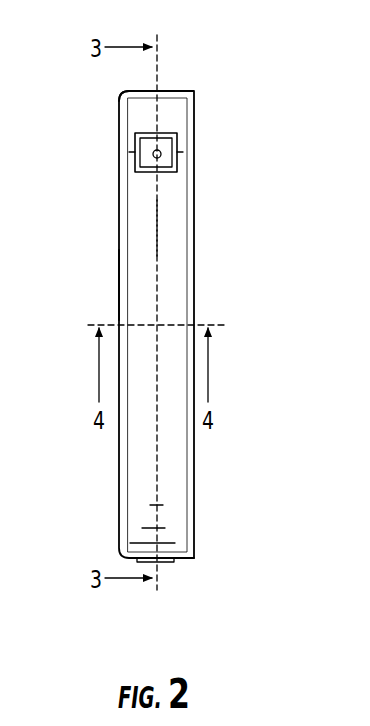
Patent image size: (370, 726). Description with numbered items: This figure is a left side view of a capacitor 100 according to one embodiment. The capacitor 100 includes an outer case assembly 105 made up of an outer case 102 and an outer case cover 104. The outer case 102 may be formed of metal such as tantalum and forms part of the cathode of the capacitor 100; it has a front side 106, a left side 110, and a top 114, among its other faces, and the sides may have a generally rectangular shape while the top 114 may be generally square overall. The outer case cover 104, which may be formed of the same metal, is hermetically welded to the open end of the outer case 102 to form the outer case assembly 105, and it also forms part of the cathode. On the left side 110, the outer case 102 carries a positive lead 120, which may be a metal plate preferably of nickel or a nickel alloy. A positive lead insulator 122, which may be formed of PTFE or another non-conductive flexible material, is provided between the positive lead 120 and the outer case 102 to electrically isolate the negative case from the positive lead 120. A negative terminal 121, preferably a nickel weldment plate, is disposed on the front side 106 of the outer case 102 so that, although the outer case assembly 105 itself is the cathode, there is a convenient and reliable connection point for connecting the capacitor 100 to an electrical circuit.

The capacitor 100 is at (207, 70).
The outer case 102 is at (145, 90).
The outer case cover 104 is at (194, 247).
The outer case assembly 105 is at (167, 486).
The front side 106 is at (188, 558).
The left side 110 is at (150, 233).
The top 114 is at (120, 284).
The positive lead 120 is at (161, 153).
The negative terminal 121 is at (162, 562).
The positive lead insulator 122 is at (177, 162).